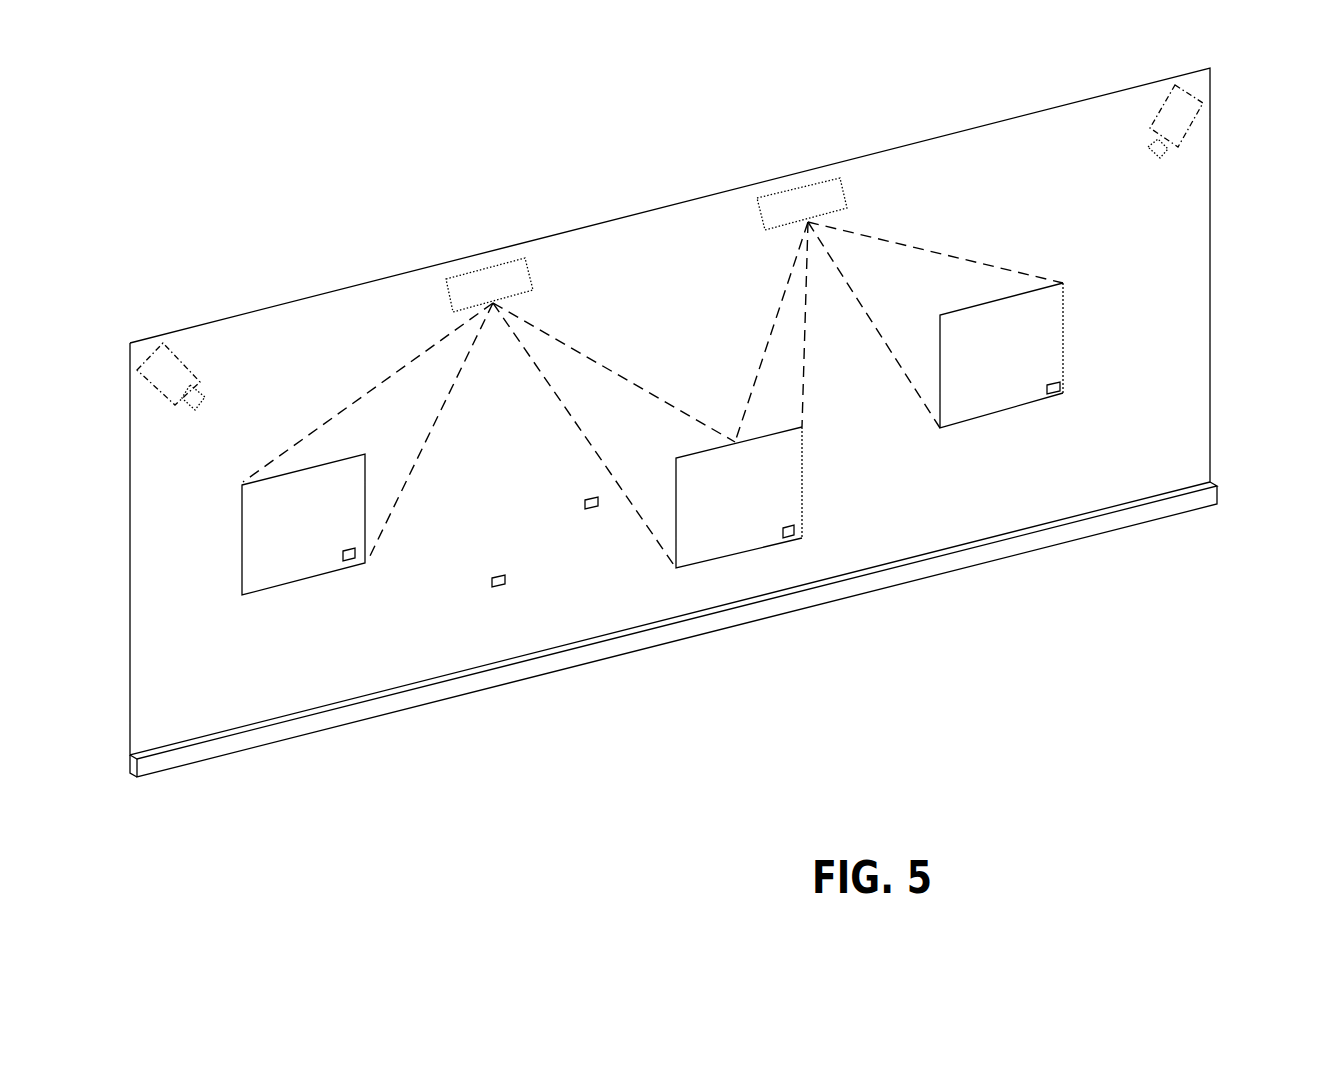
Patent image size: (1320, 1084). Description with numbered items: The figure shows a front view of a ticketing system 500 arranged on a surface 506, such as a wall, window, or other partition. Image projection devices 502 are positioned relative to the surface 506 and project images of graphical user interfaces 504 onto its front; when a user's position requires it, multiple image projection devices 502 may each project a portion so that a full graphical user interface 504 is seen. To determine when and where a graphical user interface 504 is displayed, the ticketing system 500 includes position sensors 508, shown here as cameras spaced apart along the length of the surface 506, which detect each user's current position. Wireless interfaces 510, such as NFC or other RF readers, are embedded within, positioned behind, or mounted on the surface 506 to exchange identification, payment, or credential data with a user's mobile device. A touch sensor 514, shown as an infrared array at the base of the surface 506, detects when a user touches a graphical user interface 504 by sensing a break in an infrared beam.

The ticketing system 500 is at (713, 500).
The image projection device 502 is at (845, 192).
The graphical user interface 504 is at (246, 525).
The surface 506 is at (1210, 392).
The position sensor 508 is at (200, 393).
The wireless interface 510 is at (1063, 393).
The touch sensor 514 is at (1212, 493).